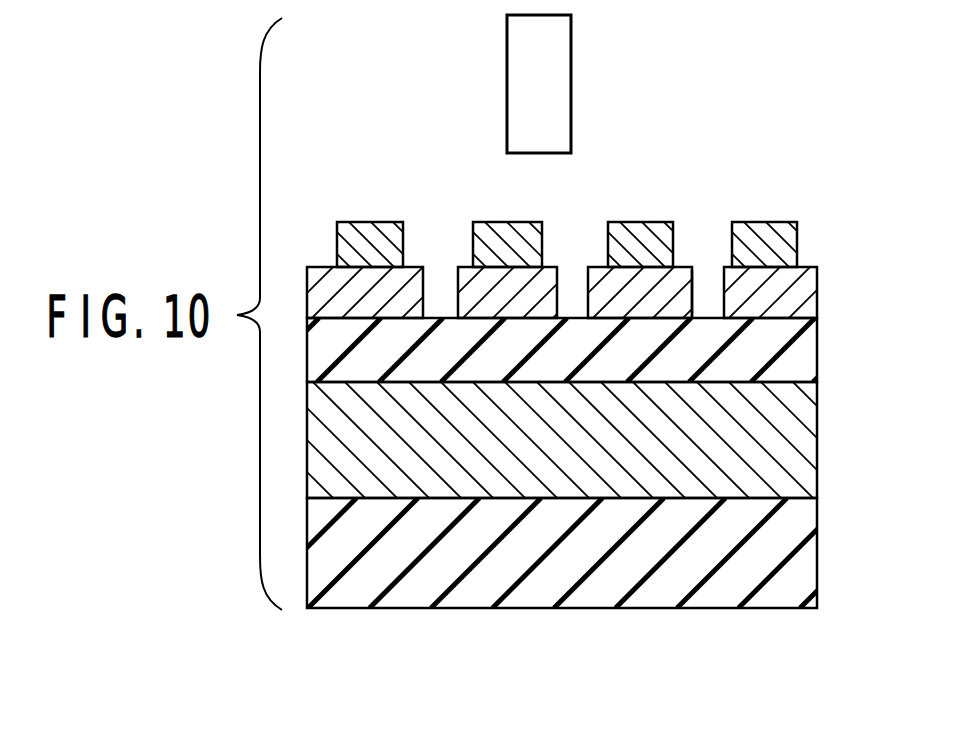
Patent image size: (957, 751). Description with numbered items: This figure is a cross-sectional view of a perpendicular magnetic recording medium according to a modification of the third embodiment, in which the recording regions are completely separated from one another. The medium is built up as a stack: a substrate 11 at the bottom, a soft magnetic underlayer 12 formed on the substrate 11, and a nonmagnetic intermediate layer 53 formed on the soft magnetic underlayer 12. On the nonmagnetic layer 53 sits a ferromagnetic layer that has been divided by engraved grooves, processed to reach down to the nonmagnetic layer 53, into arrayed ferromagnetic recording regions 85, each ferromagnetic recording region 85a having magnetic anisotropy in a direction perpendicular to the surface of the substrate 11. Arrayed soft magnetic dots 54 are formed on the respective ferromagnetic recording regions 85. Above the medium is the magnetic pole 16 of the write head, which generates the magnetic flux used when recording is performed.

The substrate 11 is at (816, 568).
The soft magnetic underlayer 12 is at (816, 450).
The nonmagnetic intermediate layer 53 is at (816, 350).
The ferromagnetic recording regions 85 is at (817, 288).
The ferromagnetic recording region 85a is at (686, 293).
The soft magnetic dots 54 is at (375, 226).
The magnetic pole 16 is at (566, 75).